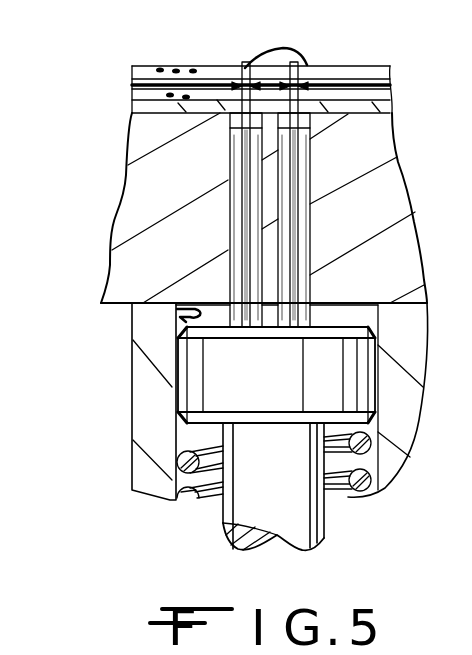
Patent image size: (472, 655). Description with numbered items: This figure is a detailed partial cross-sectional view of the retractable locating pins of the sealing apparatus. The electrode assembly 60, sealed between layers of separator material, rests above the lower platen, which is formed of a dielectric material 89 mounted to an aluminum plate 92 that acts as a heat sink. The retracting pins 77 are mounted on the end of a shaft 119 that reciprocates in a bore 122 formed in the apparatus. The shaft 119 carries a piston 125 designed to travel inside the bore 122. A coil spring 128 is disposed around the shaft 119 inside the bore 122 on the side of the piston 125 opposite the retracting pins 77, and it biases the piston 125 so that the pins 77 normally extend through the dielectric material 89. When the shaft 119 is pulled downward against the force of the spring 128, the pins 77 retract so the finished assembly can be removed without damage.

The electrode assembly 60 is at (226, 68).
The retracting pins 77 is at (300, 52).
The dielectric material 89 is at (145, 105).
The aluminum plate 92 is at (140, 190).
The bore 122 is at (178, 311).
The piston 125 is at (226, 383).
The coil spring 128 is at (178, 461).
The shaft 119 is at (305, 515).